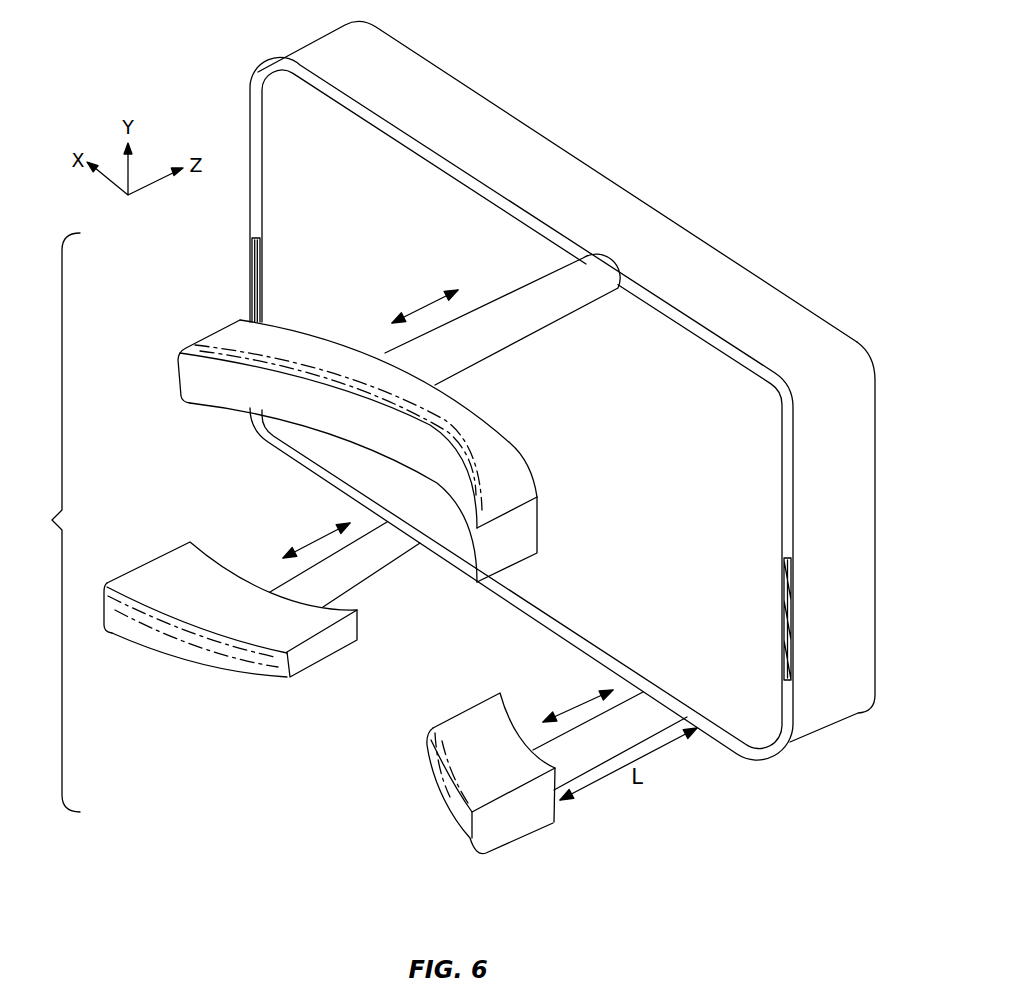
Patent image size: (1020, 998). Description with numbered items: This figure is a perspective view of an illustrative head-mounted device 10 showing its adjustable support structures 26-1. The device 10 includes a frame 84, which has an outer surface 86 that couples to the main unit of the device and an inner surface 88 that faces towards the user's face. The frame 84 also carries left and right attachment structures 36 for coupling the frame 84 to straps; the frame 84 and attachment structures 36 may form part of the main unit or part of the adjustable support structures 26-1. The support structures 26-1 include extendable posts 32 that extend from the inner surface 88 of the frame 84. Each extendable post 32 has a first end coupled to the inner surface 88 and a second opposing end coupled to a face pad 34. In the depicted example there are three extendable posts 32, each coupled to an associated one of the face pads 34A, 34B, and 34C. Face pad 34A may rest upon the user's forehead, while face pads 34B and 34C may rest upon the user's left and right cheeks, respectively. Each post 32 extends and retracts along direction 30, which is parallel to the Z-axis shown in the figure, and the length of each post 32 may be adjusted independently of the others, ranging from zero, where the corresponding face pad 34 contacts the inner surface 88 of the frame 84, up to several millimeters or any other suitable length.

The device 10 is at (625, 113).
The support structures 26-1 is at (40, 522).
The direction 30 is at (417, 308).
The extendable post 32 is at (517, 328).
The face pad 34 is at (466, 592).
The face pad 34A is at (193, 378).
The face pad 34B is at (185, 647).
The face pad 34C is at (476, 776).
The attachment structures 36 is at (247, 277).
The frame 84 is at (767, 297).
The outer surface 86 is at (456, 72).
The inner surface 88 is at (343, 103).